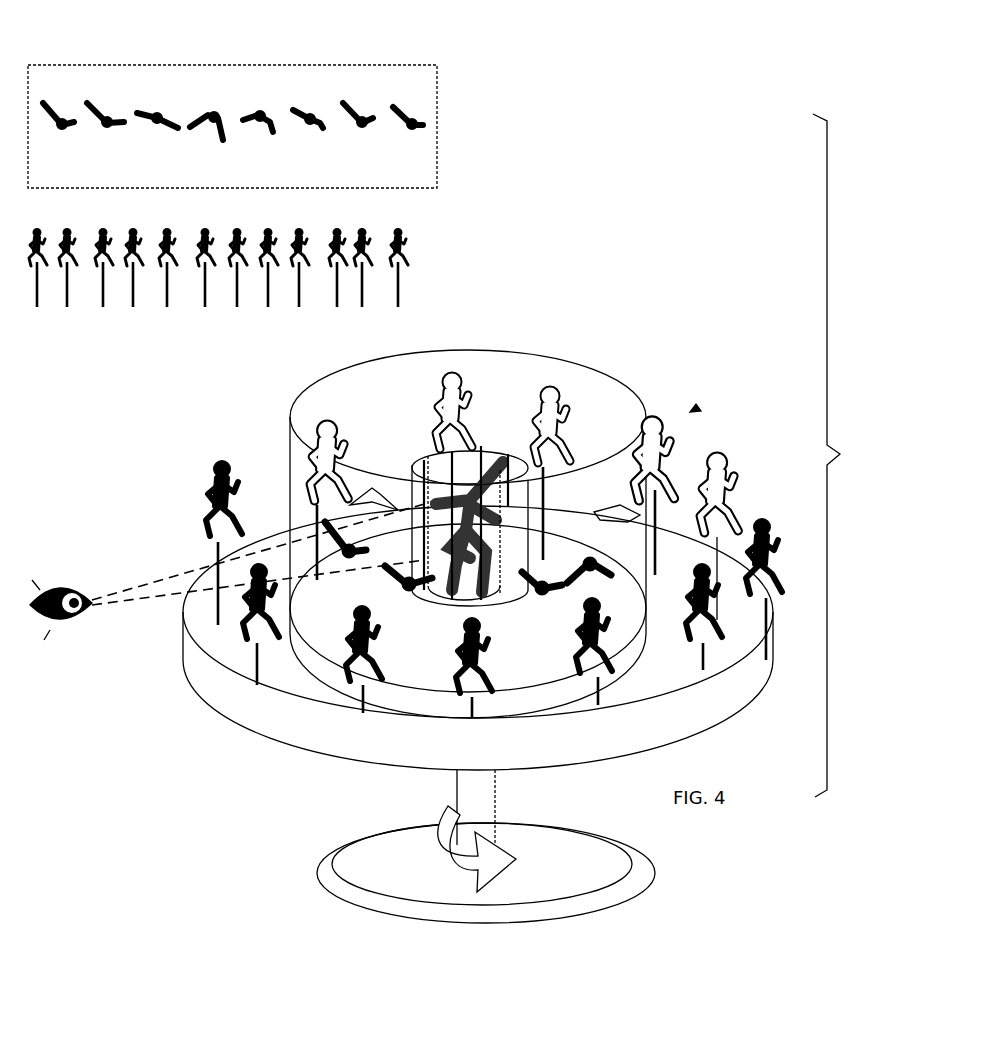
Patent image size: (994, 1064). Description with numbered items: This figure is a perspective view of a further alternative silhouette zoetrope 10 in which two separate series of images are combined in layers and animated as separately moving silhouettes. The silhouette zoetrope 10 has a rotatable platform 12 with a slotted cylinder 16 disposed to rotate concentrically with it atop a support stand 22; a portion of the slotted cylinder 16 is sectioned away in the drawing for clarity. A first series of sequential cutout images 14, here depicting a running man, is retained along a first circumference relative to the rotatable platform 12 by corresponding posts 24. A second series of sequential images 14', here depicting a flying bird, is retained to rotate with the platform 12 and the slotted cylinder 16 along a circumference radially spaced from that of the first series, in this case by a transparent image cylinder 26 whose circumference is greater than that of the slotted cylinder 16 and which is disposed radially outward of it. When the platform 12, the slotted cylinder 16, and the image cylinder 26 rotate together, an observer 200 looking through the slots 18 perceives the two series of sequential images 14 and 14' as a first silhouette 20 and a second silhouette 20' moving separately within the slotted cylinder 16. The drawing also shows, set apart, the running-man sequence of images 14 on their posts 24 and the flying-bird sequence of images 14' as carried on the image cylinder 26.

The silhouette zoetrope 10 is at (690, 412).
The rotatable platform 12 is at (194, 703).
The first series of sequential cutout images 14 is at (249, 423).
The second series of sequential images 14' is at (408, 428).
The slotted cylinder 16 is at (494, 450).
The slots 18 is at (428, 462).
The first silhouette 20 is at (441, 633).
The second silhouette 20' is at (464, 459).
The support stand 22 is at (494, 793).
The posts 24 is at (403, 292).
The transparent image cylinder 26 is at (437, 98).
The observer 200 is at (78, 596).